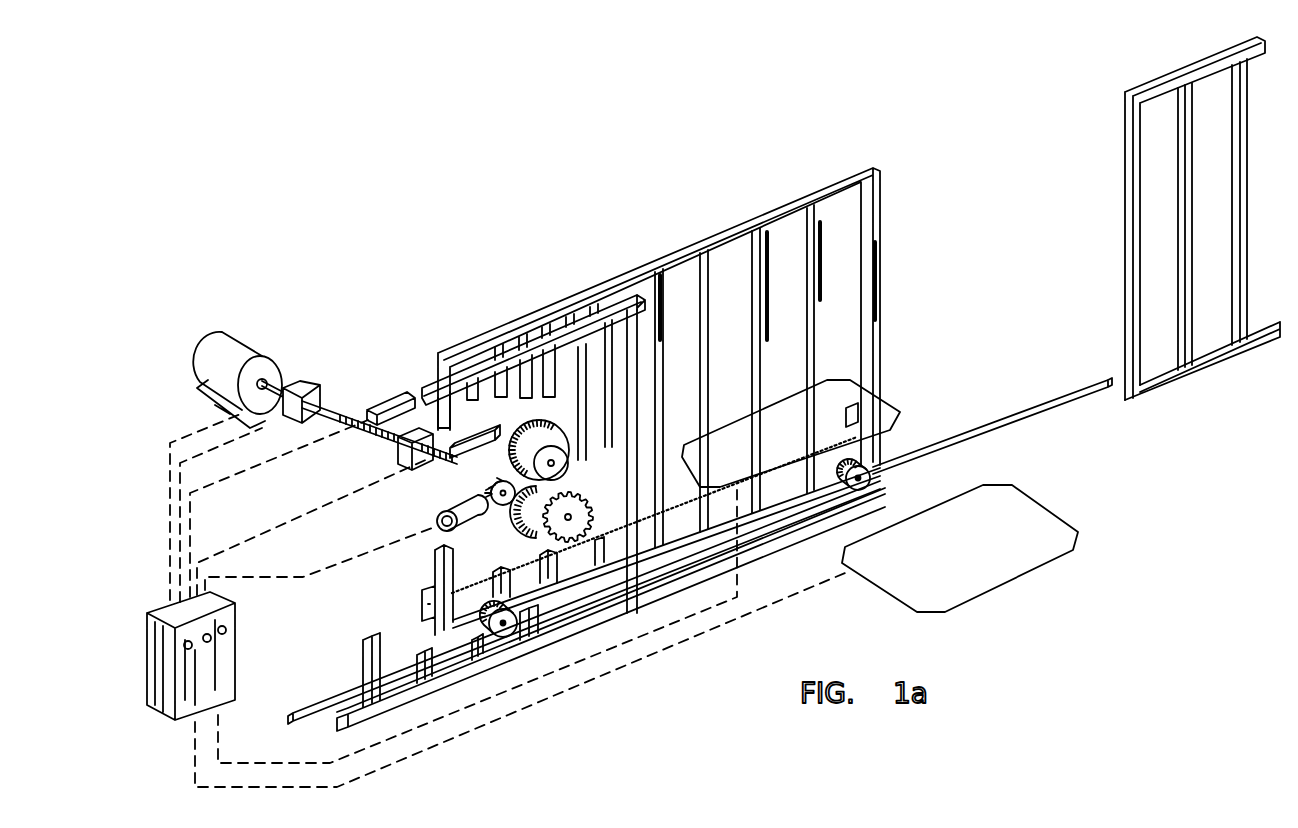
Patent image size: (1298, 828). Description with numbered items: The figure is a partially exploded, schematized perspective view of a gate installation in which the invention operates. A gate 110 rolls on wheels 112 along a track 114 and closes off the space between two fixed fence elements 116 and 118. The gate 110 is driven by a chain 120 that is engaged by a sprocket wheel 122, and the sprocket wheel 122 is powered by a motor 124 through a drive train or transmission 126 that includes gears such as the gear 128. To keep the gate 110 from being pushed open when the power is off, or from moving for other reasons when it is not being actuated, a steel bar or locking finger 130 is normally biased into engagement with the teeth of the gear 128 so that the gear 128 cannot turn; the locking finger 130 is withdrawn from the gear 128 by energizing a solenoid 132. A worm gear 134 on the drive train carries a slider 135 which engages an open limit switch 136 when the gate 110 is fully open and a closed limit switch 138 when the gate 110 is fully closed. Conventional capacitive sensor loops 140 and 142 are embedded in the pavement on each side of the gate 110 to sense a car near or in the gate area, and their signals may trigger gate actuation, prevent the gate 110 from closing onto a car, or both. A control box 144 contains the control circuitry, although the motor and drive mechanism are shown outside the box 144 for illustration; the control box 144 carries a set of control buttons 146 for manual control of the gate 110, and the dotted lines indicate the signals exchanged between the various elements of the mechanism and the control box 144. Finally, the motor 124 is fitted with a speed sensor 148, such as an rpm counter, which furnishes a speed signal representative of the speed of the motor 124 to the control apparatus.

The gate 110 is at (686, 250).
The wheels 112 is at (868, 490).
The track 114 is at (1037, 413).
The fixed fence element 116 is at (492, 362).
The fixed fence element 118 is at (1168, 80).
The chain 120 is at (685, 497).
The sprocket wheel 122 is at (548, 553).
The motor 124 is at (250, 335).
The drive train or transmission 126 is at (603, 498).
The gear 128 is at (497, 506).
The locking finger 130 is at (475, 490).
The solenoid 132 is at (440, 513).
The worm gear 134 is at (372, 440).
The slider 135 is at (397, 460).
The open limit switch 136 is at (388, 392).
The closed limit switch 138 is at (490, 430).
The capacitive sensor loop 140 is at (905, 610).
The capacitive sensor loop 142 is at (888, 408).
The control box 144 is at (200, 712).
The control buttons 146 is at (225, 633).
The speed sensor 148 is at (310, 385).